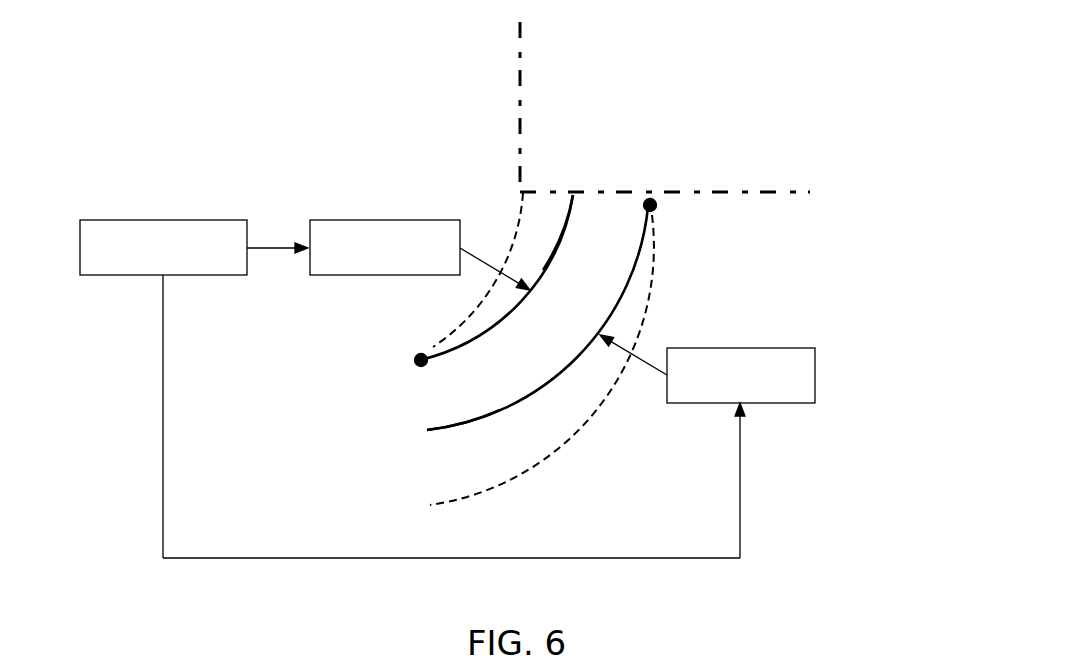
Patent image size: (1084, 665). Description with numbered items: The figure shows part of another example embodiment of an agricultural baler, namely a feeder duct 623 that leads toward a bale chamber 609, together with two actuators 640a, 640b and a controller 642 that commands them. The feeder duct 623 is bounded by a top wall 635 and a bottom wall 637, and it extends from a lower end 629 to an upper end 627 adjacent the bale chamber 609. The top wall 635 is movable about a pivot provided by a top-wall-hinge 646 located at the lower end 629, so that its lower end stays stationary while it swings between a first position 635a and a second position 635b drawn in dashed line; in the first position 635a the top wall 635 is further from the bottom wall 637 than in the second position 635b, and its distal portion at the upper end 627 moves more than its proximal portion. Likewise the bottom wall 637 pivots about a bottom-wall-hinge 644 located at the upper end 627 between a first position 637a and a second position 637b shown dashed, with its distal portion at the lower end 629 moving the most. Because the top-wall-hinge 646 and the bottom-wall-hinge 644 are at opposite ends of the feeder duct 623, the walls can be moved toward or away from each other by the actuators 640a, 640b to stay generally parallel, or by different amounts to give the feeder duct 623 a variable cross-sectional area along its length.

The bale chamber 609 is at (518, 60).
The upper end of the feeder duct 627 is at (618, 159).
The top wall 635 is at (478, 337).
The first position of the top wall 635a is at (567, 220).
The second position of the top wall 635b is at (518, 218).
The bottom wall 637 is at (629, 278).
The first position of the bottom wall 637a is at (478, 420).
The second position of the bottom wall 637b is at (565, 450).
The feeder duct 623 is at (515, 340).
The lower end of the feeder duct 629 is at (405, 408).
The actuator 640a is at (385, 220).
The actuator 640b is at (817, 377).
The controller 642 is at (143, 220).
The bottom-wall-hinge 644 is at (656, 207).
The top-wall-hinge 646 is at (415, 366).